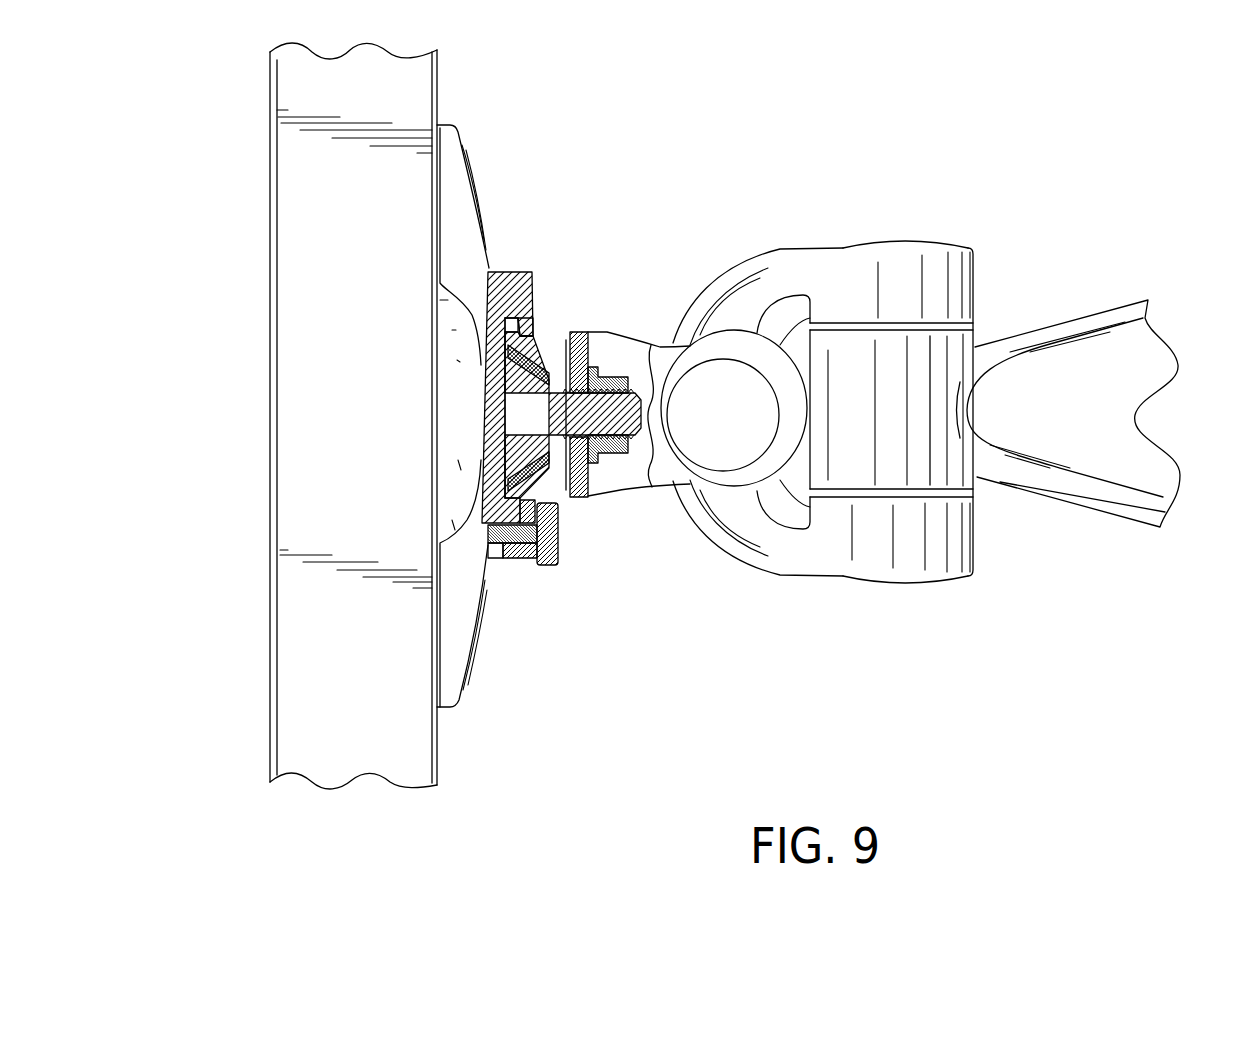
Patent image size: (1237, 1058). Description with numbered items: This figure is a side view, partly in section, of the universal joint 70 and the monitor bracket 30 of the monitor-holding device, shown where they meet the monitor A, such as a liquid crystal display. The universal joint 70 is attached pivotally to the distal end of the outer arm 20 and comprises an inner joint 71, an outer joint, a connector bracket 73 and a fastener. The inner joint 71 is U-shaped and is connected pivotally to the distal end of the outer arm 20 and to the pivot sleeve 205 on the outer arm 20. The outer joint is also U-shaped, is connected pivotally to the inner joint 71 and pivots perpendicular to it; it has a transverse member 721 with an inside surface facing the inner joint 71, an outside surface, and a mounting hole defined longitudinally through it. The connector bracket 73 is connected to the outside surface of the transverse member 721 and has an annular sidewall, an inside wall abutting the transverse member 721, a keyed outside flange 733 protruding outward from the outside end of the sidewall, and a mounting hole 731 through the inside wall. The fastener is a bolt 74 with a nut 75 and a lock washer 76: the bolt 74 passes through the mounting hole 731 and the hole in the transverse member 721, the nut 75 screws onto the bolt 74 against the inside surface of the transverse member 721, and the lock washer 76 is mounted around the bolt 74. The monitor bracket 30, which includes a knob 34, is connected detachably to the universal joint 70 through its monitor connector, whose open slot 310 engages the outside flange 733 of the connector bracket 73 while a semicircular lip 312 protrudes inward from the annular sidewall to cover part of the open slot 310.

The monitor A is at (300, 688).
The monitor bracket 30 is at (503, 271).
The open slot 310 is at (511, 320).
The semicircular lip 312 is at (518, 324).
The bolt 74 is at (503, 400).
The outside flange 733 is at (518, 338).
The lock washer 76 is at (515, 462).
The mounting hole 731 is at (527, 427).
The nut 75 is at (622, 453).
The transverse member 721 is at (592, 500).
The universal joint 70 is at (692, 558).
The inner joint 71 is at (806, 572).
The pivot sleeve 205 is at (928, 478).
The outer arm 20 is at (1086, 512).
The knob 34 is at (545, 570).
The connector bracket 73 is at (559, 514).